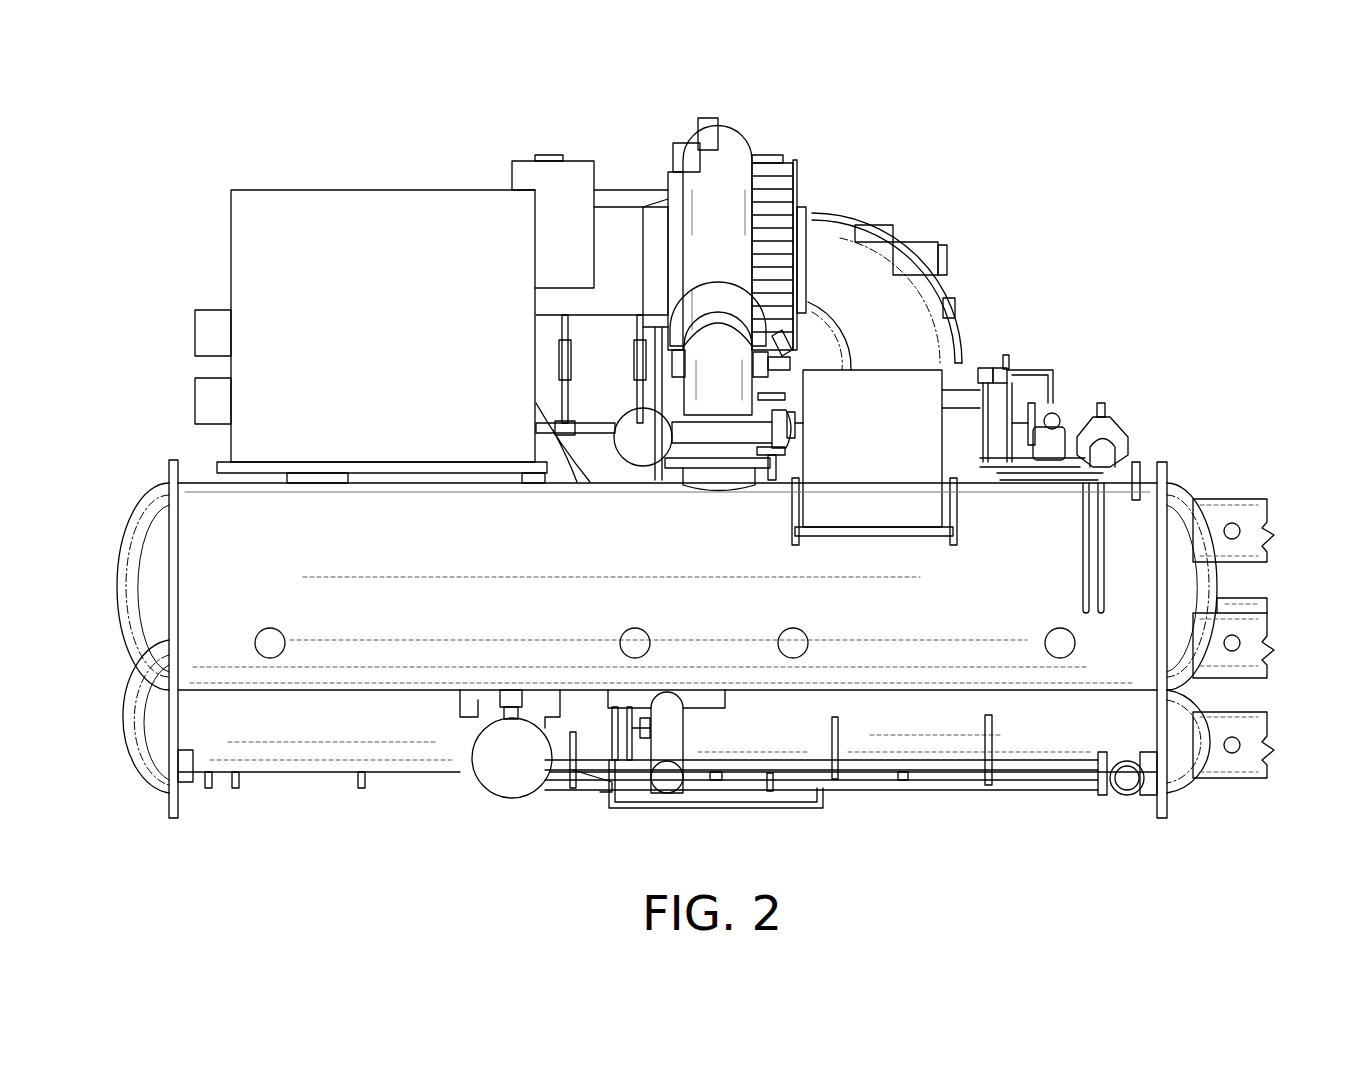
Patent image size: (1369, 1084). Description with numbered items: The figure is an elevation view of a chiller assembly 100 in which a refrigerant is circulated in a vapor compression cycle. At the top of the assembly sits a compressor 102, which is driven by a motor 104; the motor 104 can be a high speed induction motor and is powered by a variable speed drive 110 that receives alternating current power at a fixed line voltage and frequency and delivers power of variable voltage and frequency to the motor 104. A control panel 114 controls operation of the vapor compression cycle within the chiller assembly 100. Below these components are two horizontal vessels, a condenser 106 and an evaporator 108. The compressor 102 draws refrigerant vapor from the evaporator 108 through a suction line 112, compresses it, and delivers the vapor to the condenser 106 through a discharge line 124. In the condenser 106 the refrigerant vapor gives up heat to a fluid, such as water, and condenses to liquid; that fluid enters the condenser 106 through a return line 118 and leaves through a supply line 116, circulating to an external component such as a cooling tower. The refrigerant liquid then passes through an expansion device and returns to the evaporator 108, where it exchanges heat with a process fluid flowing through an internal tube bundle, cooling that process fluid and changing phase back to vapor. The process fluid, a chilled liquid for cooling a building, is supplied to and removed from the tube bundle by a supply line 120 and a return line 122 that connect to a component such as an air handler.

The chiller assembly 100 is at (197, 126).
The compressor 102 is at (737, 138).
The motor 104 is at (617, 216).
The condenser 106 is at (197, 541).
The evaporator 108 is at (280, 722).
The variable speed drive 110 is at (371, 207).
The suction line 112 is at (882, 296).
The control panel 114 is at (913, 396).
The supply line 116 is at (1253, 513).
The return line 118 is at (1259, 655).
The supply line 120 is at (1256, 606).
The return line 122 is at (1253, 730).
The discharge line 124 is at (723, 365).